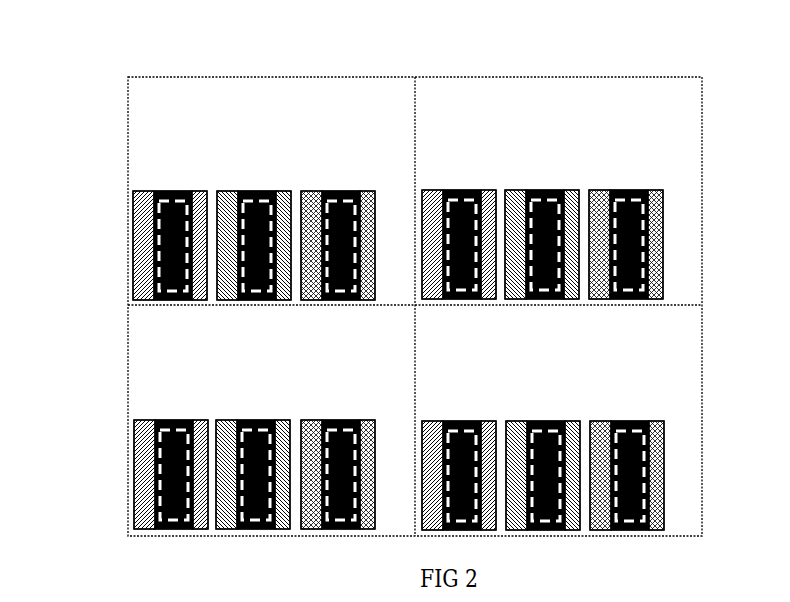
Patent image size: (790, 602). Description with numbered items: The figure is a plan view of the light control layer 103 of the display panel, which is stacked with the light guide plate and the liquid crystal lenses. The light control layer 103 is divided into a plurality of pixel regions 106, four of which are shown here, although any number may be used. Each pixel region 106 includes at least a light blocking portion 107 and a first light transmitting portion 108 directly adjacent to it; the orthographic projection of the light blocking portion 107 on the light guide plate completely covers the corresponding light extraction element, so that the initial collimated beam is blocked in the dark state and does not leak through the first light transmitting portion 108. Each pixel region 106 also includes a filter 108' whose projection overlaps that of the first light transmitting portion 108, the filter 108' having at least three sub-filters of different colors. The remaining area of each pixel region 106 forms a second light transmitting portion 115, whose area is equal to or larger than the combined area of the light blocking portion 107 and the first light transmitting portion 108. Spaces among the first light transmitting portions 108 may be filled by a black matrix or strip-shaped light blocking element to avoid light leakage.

The light control layer 103 is at (75, 32).
The pixel region 106 is at (457, 105).
The light blocking portion 107 is at (475, 190).
The first light transmitting portion 108 is at (215, 193).
The filter 108' is at (215, 421).
The second light transmitting portion 115 is at (417, 247).